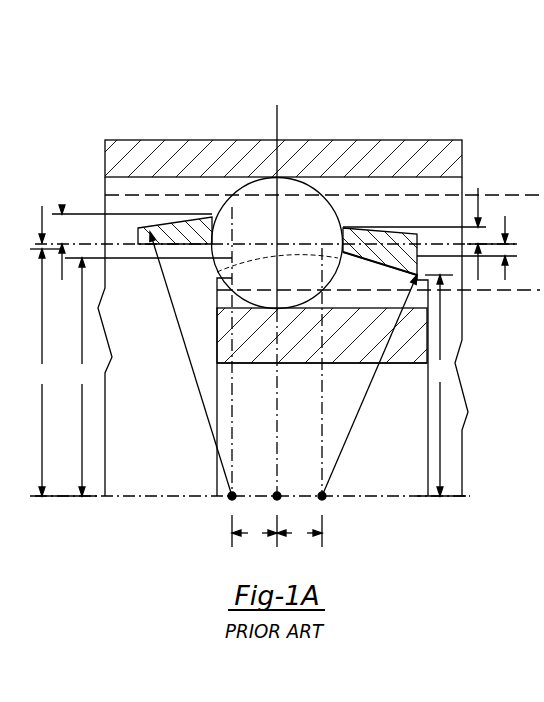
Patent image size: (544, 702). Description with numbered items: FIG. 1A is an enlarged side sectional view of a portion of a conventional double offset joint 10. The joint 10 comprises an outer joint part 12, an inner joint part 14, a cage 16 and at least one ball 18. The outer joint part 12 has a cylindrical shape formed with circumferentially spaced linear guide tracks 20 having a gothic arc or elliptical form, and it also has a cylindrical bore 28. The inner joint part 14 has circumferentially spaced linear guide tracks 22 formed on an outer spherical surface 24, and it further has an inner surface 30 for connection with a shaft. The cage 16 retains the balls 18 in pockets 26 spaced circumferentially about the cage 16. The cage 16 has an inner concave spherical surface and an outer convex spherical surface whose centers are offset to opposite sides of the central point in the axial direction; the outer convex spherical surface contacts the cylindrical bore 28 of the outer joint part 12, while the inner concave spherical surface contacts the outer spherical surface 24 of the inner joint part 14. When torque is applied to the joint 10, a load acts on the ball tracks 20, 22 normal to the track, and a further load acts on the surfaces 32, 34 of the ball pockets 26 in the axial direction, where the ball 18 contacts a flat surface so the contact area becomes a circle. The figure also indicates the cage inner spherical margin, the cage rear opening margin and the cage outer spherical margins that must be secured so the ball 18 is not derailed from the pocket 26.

The double offset joint 10 is at (158, 120).
The outer joint part 12 is at (128, 141).
The inner joint part 14 is at (401, 362).
The cage 16 is at (367, 233).
The ball 18 is at (253, 203).
The linear guide track 20 is at (403, 187).
The linear guide track 22 is at (419, 299).
The outer spherical surface 24 is at (389, 262).
The pocket 26 is at (289, 226).
The cylindrical bore 28 is at (430, 208).
The inner surface 30 is at (307, 364).
The surface of ball pocket 32 is at (318, 213).
The surface of ball pocket 34 is at (222, 214).